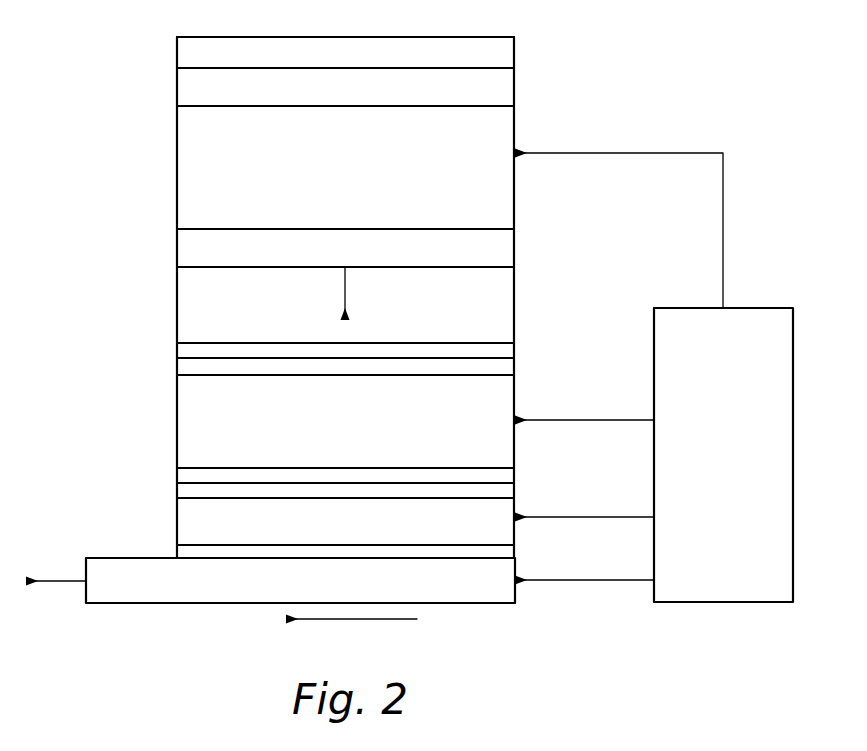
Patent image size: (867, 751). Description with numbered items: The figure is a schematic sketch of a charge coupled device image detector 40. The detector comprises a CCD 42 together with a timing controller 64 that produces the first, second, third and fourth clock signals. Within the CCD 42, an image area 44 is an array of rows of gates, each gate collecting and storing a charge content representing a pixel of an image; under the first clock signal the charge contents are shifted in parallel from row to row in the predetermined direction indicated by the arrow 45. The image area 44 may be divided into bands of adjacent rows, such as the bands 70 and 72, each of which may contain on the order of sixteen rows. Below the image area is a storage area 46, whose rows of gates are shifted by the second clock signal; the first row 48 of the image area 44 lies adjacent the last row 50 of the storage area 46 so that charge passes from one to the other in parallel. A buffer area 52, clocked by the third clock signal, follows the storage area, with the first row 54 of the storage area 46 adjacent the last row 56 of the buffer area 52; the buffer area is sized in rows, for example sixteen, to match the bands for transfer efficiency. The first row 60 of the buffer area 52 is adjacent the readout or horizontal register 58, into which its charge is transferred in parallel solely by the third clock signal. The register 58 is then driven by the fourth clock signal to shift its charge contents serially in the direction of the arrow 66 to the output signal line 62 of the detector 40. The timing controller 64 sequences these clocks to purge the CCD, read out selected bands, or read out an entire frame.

The CCD image detector 40 is at (689, 106).
The CCD 42 is at (514, 52).
The image area 44 is at (514, 183).
The arrow 45 is at (350, 296).
The storage area 46 is at (183, 422).
The first row of the image area array 48 is at (175, 352).
The last row of the storage area array 50 is at (514, 365).
The buffer area 52 is at (177, 525).
The first row of the storage area array 54 is at (177, 475).
The last row of the buffer area array 56 is at (514, 489).
The readout or horizontal register 58 is at (132, 595).
The first row of the buffer area array 60 is at (177, 552).
The output signal line 62 is at (61, 581).
The timing controller 64 is at (764, 308).
The arrow 66 is at (345, 619).
The band 70 is at (177, 250).
The band 72 is at (177, 85).